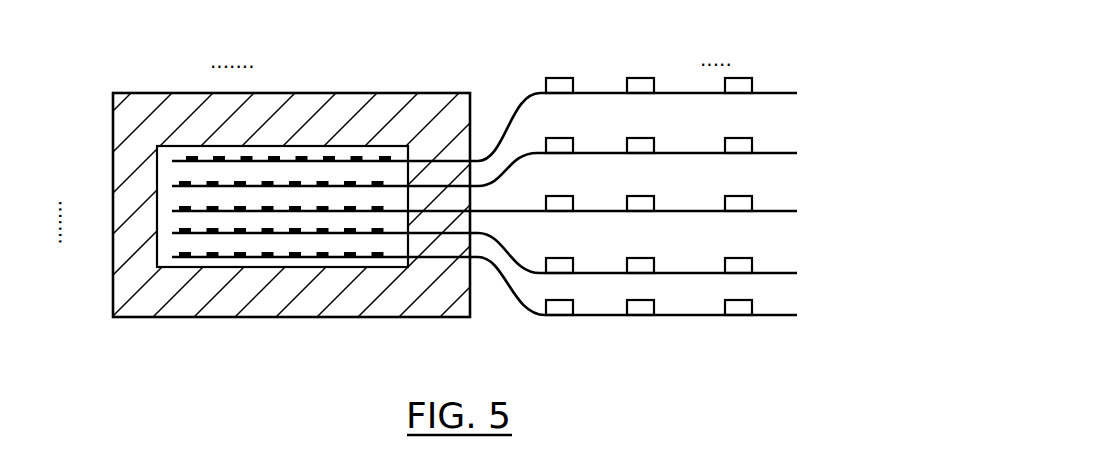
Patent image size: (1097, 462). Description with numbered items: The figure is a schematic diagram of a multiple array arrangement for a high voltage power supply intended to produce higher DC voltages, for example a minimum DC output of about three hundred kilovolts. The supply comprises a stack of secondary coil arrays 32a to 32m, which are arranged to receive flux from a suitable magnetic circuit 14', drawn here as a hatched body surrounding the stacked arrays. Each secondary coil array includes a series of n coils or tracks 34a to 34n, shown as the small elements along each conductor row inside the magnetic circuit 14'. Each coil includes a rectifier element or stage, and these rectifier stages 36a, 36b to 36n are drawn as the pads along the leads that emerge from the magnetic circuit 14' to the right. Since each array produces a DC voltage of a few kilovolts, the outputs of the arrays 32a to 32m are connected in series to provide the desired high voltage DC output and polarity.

The magnetic circuit 14' is at (291, 230).
The secondary coil array 32a is at (172, 162).
The secondary coil array 32m is at (170, 258).
The coil or track 34a is at (192, 160).
The coil or track 34n is at (387, 158).
The rectifier element or stage 36a is at (559, 77).
The rectifier element or stage 36b is at (640, 77).
The rectifier element or stage 36n is at (741, 77).